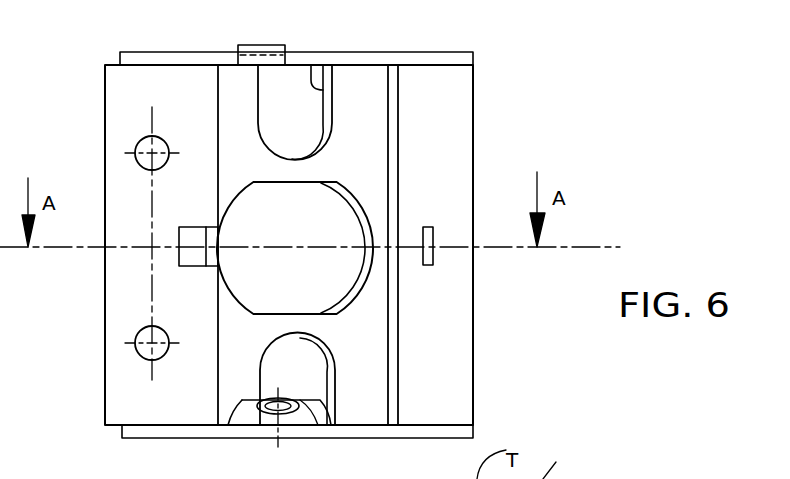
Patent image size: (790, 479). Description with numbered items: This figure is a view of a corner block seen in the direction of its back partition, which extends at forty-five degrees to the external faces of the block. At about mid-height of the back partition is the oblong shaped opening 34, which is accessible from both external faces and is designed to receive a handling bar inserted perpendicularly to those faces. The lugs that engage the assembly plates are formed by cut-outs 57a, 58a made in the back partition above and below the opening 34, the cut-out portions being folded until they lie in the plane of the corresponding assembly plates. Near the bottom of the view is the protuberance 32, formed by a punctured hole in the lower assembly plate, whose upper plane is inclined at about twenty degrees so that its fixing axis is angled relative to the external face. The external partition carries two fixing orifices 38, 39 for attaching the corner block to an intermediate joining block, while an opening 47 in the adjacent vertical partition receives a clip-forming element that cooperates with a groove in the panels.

The cut-out 57a is at (312, 66).
The cut-out 58a is at (318, 388).
The protuberance 32 is at (252, 408).
The oblong shaped opening 34 is at (347, 218).
The opening 47 is at (185, 255).
The fixing orifice 38 is at (133, 143).
The fixing orifice 39 is at (135, 347).